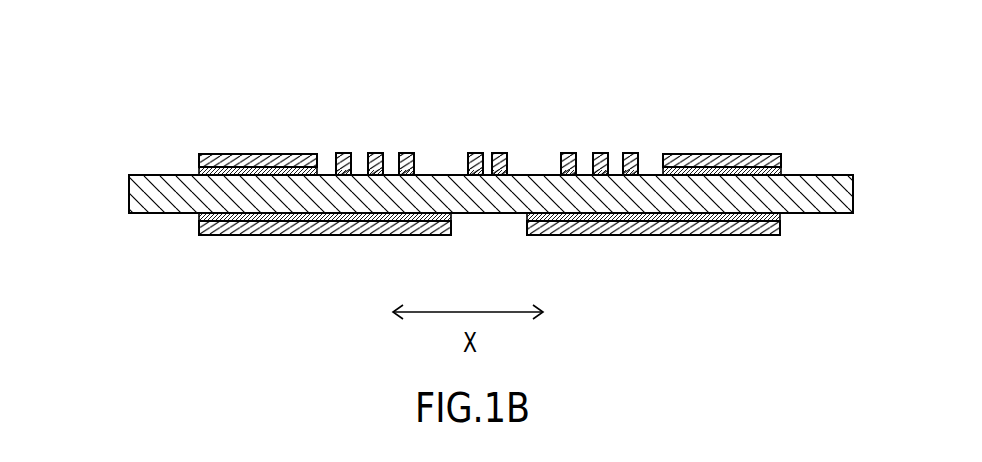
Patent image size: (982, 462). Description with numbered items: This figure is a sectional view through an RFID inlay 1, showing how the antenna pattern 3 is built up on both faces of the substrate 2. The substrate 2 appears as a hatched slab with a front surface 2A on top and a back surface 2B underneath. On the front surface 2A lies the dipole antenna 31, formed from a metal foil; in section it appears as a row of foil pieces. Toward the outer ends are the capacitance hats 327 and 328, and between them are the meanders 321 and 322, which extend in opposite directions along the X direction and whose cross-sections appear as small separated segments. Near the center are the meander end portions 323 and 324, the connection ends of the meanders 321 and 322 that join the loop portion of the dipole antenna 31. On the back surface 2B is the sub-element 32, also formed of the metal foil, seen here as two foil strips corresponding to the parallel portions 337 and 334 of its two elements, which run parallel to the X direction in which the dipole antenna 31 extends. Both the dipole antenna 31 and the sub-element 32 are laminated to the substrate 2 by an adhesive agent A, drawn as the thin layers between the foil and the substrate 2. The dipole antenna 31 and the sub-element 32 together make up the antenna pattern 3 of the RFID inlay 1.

The RFID inlay 1 is at (492, 166).
The substrate 2 is at (450, 198).
The front surface 2A is at (145, 175).
The back surface 2B is at (145, 213).
The antenna pattern 3 is at (492, 187).
The dipole antenna 31 is at (543, 114).
The sub-element 32 is at (546, 267).
The meander 321 is at (465, 140).
The meander 322 is at (628, 140).
The meander end portion 323 is at (477, 153).
The meander end portion 324 is at (498, 153).
The capacitance hat 327 is at (252, 153).
The capacitance hat 328 is at (728, 153).
The parallel portion 334 is at (662, 235).
The parallel portion 337 is at (308, 235).
The adhesive agent A is at (198, 170).